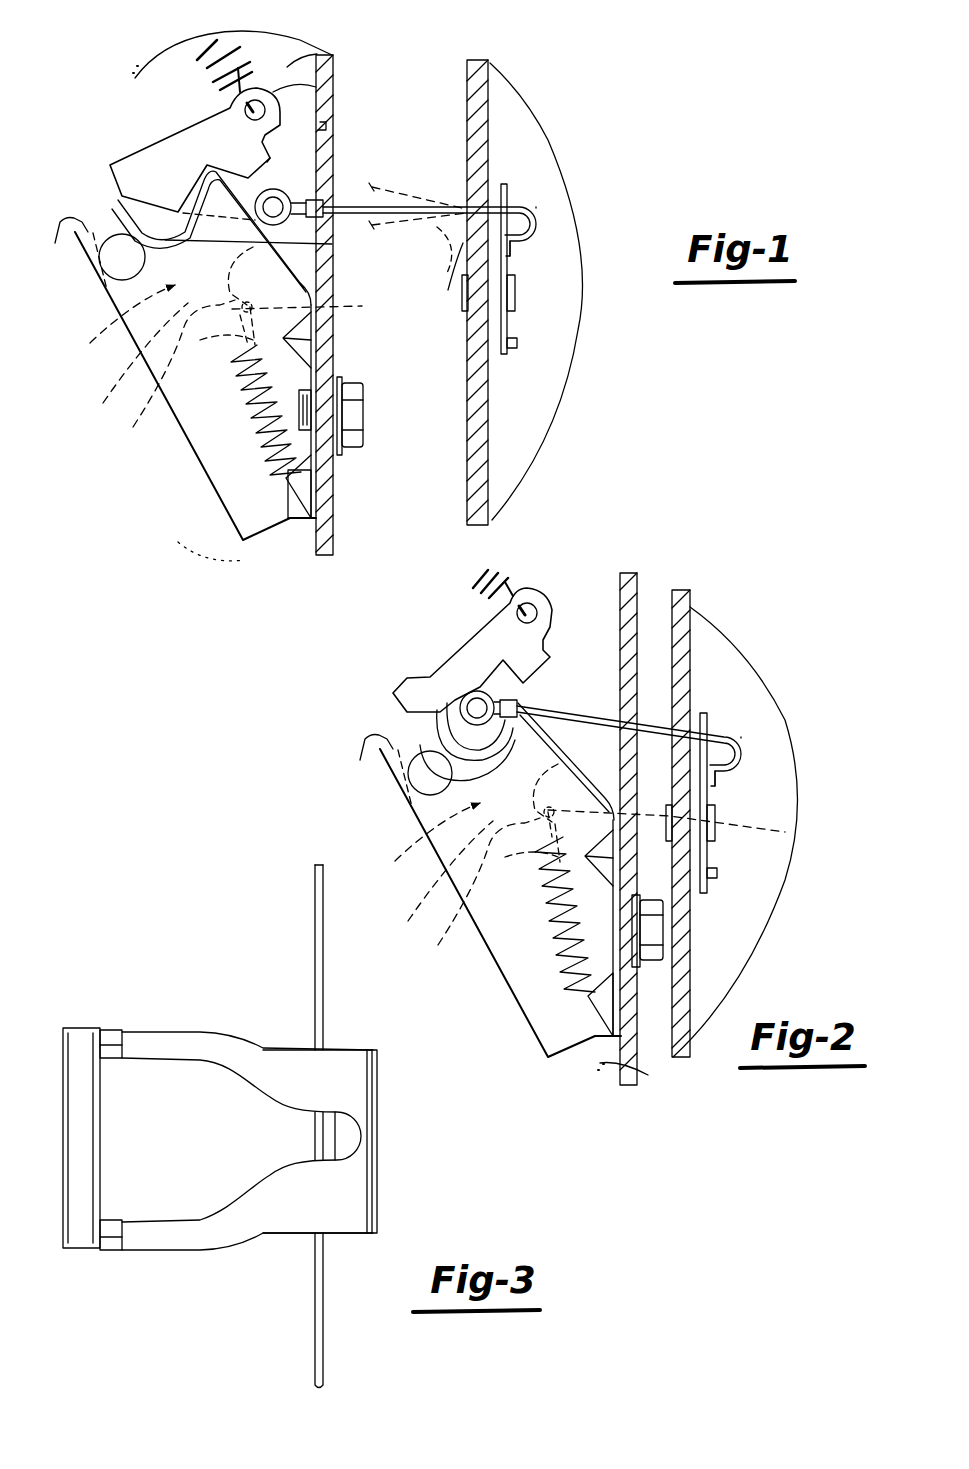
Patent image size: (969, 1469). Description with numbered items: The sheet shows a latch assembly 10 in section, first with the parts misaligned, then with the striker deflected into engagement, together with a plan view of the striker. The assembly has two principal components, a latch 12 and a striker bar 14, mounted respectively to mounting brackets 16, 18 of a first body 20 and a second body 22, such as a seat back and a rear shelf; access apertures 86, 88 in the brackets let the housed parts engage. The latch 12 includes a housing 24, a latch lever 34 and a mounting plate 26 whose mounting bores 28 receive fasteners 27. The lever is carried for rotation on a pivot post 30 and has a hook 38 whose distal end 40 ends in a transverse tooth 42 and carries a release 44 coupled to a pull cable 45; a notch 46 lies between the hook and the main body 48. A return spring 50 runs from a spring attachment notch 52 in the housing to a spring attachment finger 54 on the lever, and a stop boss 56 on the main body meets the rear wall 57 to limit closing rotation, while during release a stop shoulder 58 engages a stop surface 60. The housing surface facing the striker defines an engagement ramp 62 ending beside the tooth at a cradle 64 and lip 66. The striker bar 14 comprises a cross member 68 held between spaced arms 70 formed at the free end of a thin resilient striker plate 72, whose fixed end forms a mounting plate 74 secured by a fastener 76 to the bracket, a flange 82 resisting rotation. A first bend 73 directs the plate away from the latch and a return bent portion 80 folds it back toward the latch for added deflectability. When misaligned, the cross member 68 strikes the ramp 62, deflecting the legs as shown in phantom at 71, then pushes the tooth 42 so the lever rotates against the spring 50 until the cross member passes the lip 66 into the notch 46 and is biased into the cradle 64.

In FIG. 1, the latch assembly 10 is at (100, 488).
In FIG. 2, the latch assembly 10 is at (275, 735).
In FIG. 1, the latch 12 is at (177, 379).
In FIG. 2, the latch 12 is at (464, 888).
In FIG. 1, the striker bar 14 is at (478, 259).
In FIG. 2, the striker bar 14 is at (690, 774).
In FIG. 3, the striker bar 14 is at (242, 1116).
In FIG. 1, the mounting bracket 16 is at (330, 107).
In FIG. 2, the mounting bracket 16 is at (633, 593).
In FIG. 1, the mounting bracket 18 is at (479, 88).
In FIG. 2, the mounting bracket 18 is at (693, 603).
In FIG. 3, the mounting bracket 18 is at (315, 946).
In FIG. 1, the first body 20 is at (288, 66).
In FIG. 2, the first body 20 is at (595, 1068).
In FIG. 1, the second body 22 is at (516, 127).
In FIG. 2, the second body 22 is at (733, 958).
In FIG. 1, the housing 24 is at (207, 440).
In FIG. 1, the mounting plate 26 is at (292, 488).
In FIG. 1, the fastener 27 is at (352, 418).
In FIG. 2, the fastener 27 is at (660, 929).
In FIG. 1, the mounting bore 28 is at (340, 372).
In FIG. 1, the pivot post 30 is at (118, 275).
In FIG. 2, the pivot post 30 is at (412, 780).
In FIG. 1, the latch lever 34 is at (112, 322).
In FIG. 2, the latch lever 34 is at (413, 832).
In FIG. 1, the hook 38 is at (221, 147).
In FIG. 2, the hook 38 is at (452, 650).
In FIG. 1, the distal end 40 is at (232, 110).
In FIG. 2, the distal end 40 is at (503, 615).
In FIG. 1, the tooth 42 is at (272, 158).
In FIG. 2, the tooth 42 is at (540, 654).
In FIG. 1, the release 44 is at (330, 90).
In FIG. 2, the release 44 is at (523, 593).
In FIG. 1, the pull cable 45 is at (258, 52).
In FIG. 2, the pull cable 45 is at (473, 580).
In FIG. 1, the notch 46 is at (120, 194).
In FIG. 2, the notch 46 is at (393, 693).
In FIG. 1, the main body 48 is at (126, 363).
In FIG. 2, the main body 48 is at (428, 871).
In FIG. 1, the return spring 50 is at (300, 458).
In FIG. 2, the return spring 50 is at (540, 950).
In FIG. 1, the spring attachment notch 52 is at (305, 530).
In FIG. 2, the spring attachment notch 52 is at (590, 1057).
In FIG. 1, the spring attachment finger 54 is at (315, 315).
In FIG. 2, the spring attachment finger 54 is at (683, 827).
In FIG. 1, the stop boss 56 is at (177, 351).
In FIG. 2, the stop boss 56 is at (469, 854).
In FIG. 1, the rear wall 57 is at (205, 486).
In FIG. 2, the rear wall 57 is at (510, 998).
In FIG. 1, the stop shoulder 58 is at (110, 165).
In FIG. 2, the stop shoulder 58 is at (407, 679).
In FIG. 1, the stop surface 60 is at (95, 236).
In FIG. 2, the stop surface 60 is at (393, 746).
In FIG. 1, the engagement ramp 62 is at (308, 272).
In FIG. 2, the engagement ramp 62 is at (607, 727).
In FIG. 1, the cradle 64 is at (300, 241).
In FIG. 2, the cradle 64 is at (420, 750).
In FIG. 1, the lip 66 is at (170, 162).
In FIG. 2, the lip 66 is at (513, 694).
In FIG. 1, the cross member 68 is at (300, 191).
In FIG. 2, the cross member 68 is at (525, 716).
In FIG. 3, the cross member 68 is at (63, 1212).
In FIG. 1, the arms 70 is at (388, 208).
In FIG. 2, the arms 70 is at (660, 727).
In FIG. 3, the arms 70 is at (209, 1040).
In FIG. 1, the deflected legs in phantom 71 is at (470, 178).
In FIG. 1, the striker plate 72 is at (548, 212).
In FIG. 2, the striker plate 72 is at (752, 735).
In FIG. 3, the striker plate 72 is at (285, 1240).
In FIG. 1, the first bend 73 is at (512, 250).
In FIG. 2, the first bend 73 is at (718, 780).
In FIG. 3, the first bend 73 is at (110, 1030).
In FIG. 1, the mounting plate 74 is at (508, 330).
In FIG. 2, the mounting plate 74 is at (710, 808).
In FIG. 1, the fastener 76 is at (516, 290).
In FIG. 2, the fastener 76 is at (715, 838).
In FIG. 1, the return bent portion 80 is at (550, 232).
In FIG. 2, the return bent portion 80 is at (758, 758).
In FIG. 3, the return bent portion 80 is at (377, 1167).
In FIG. 1, the flange 82 is at (518, 345).
In FIG. 2, the flange 82 is at (722, 873).
In FIG. 1, the access aperture 86 is at (323, 127).
In FIG. 1, the access aperture 88 is at (448, 276).